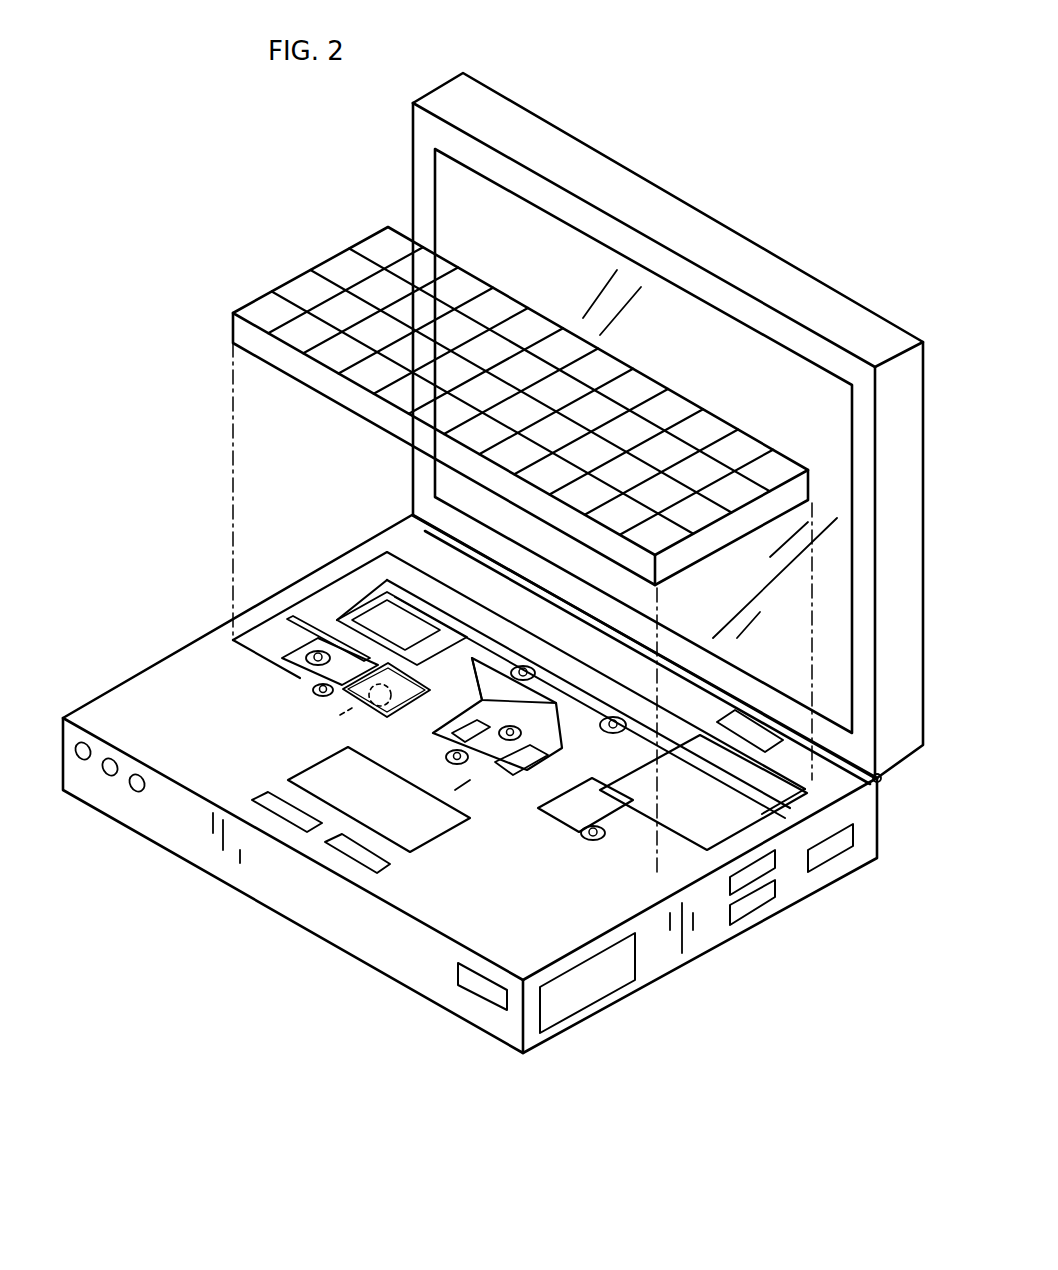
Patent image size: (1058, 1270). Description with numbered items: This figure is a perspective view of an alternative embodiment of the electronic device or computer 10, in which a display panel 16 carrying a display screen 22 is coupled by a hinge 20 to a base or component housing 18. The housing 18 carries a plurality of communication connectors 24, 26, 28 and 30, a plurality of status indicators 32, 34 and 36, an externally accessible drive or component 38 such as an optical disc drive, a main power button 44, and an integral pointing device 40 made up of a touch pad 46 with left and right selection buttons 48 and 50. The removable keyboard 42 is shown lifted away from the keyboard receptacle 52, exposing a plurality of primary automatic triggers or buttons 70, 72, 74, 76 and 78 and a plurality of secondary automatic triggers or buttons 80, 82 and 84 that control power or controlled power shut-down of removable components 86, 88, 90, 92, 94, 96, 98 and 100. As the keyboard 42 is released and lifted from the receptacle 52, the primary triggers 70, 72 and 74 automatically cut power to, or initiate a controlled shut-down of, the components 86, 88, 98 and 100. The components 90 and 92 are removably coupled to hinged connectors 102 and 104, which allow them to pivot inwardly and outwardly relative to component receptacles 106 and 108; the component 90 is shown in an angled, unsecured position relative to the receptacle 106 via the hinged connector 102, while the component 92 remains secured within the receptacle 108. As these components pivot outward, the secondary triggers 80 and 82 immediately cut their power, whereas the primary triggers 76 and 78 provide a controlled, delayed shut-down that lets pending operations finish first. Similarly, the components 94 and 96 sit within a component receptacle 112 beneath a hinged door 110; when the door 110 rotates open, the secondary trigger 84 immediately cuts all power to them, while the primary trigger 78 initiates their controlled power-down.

The electronic device or computer 10 is at (742, 96).
The display panel 16 is at (803, 266).
The base or component housing 18 is at (548, 1040).
The hinge 20 is at (882, 782).
The display screen 22 is at (555, 237).
The communication connector 24 is at (835, 852).
The communication connector 26 is at (760, 887).
The communication connector 28 is at (747, 927).
The communication connector 30 is at (468, 992).
The status indicator 32 is at (83, 760).
The status indicator 34 is at (110, 777).
The status indicator 36 is at (137, 792).
The externally accessible drive or component 38 is at (615, 980).
The integral pointing device 40 is at (257, 750).
The removable keyboard 42 is at (328, 258).
The main power button 44 is at (752, 722).
The touch pad 46 is at (432, 845).
The left selection button 48 is at (283, 822).
The right selection button 50 is at (348, 860).
The keyboard receptacle 52 is at (388, 560).
The primary automatic trigger or button 70 is at (532, 668).
The primary automatic trigger or button 72 is at (616, 720).
The primary automatic trigger or button 74 is at (595, 841).
The primary automatic trigger or button 76 is at (318, 692).
The primary automatic trigger or button 78 is at (440, 775).
The secondary automatic trigger or button 80 is at (305, 668).
The secondary automatic trigger or button 82 is at (342, 716).
The secondary automatic trigger or button 84 is at (452, 797).
The removable component 86 is at (393, 605).
The removable component 88 is at (757, 822).
The removable component 90 is at (327, 640).
The removable component 92 is at (400, 677).
The removable component 94 is at (430, 748).
The removable component 96 is at (505, 745).
The removable component 98 is at (560, 832).
The removable component 100 is at (655, 858).
The hinged connector 102 is at (394, 608).
The hinged connector 104 is at (425, 628).
The component receptacle 106 is at (287, 640).
The component receptacle 108 is at (385, 727).
The hinged door 110 is at (550, 700).
The component receptacle 112 is at (533, 775).